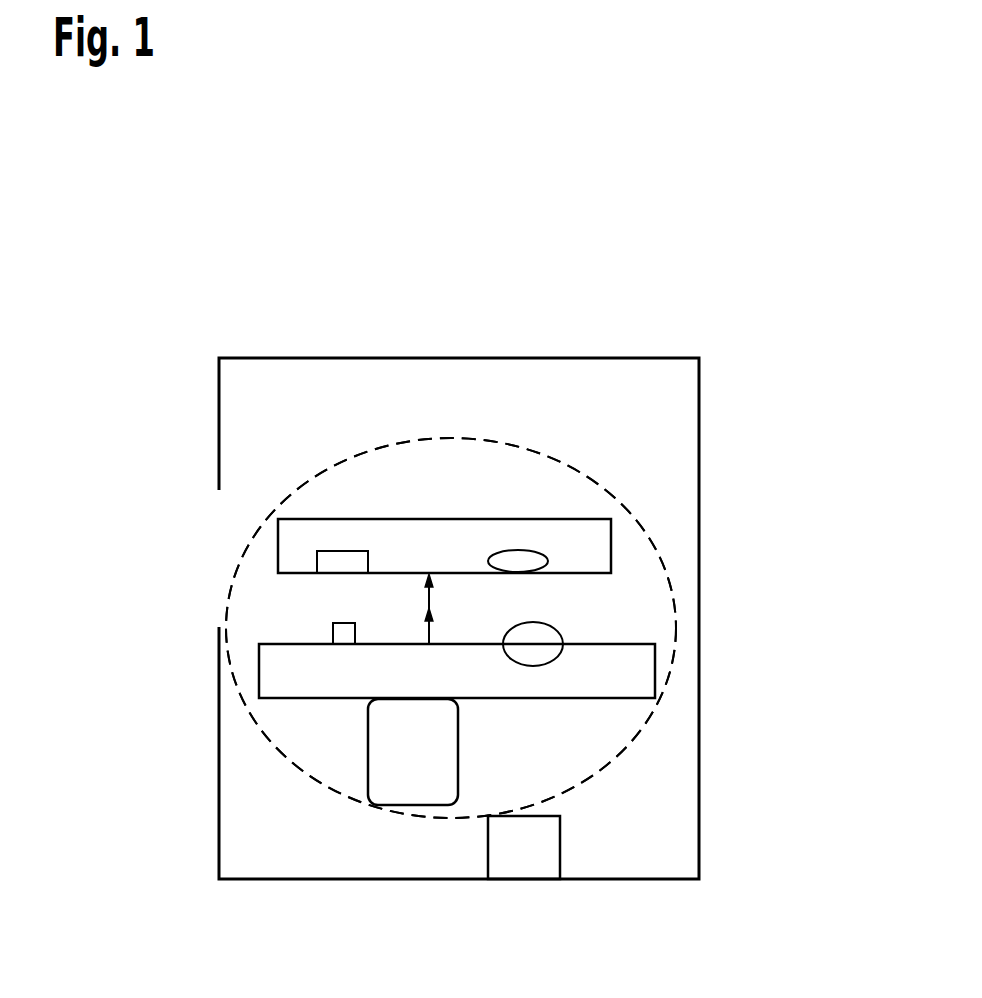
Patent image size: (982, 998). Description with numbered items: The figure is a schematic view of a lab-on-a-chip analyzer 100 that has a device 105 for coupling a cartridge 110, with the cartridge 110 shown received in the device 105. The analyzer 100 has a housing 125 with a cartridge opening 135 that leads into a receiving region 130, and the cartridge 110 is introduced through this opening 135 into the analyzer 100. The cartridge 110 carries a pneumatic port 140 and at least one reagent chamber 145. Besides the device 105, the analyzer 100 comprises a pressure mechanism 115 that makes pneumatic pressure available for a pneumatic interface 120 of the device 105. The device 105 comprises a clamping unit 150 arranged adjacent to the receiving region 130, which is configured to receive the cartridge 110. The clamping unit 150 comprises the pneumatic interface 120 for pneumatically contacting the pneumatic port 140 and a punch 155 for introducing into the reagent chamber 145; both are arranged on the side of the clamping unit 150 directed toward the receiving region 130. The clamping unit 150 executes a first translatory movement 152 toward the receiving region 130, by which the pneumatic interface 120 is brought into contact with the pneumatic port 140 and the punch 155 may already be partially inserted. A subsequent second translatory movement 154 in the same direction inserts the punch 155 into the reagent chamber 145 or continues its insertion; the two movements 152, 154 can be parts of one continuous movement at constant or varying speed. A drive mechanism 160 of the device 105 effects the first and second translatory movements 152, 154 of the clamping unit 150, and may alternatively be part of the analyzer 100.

The lab-on-a-chip analyzer 100 is at (228, 290).
The device 105 is at (223, 612).
The cartridge 110 is at (632, 533).
The pressure mechanism 115 is at (560, 845).
The pneumatic interface 120 is at (543, 653).
The housing 125 is at (636, 358).
The receiving region 130 is at (676, 617).
The cartridge opening 135 is at (237, 512).
The pneumatic port 140 is at (548, 557).
The reagent chamber 145 is at (343, 552).
The clamping unit 150 is at (672, 683).
The first translatory movement 152 is at (426, 633).
The second translatory movement 154 is at (433, 601).
The punch 155 is at (338, 637).
The drive mechanism 160 is at (368, 757).